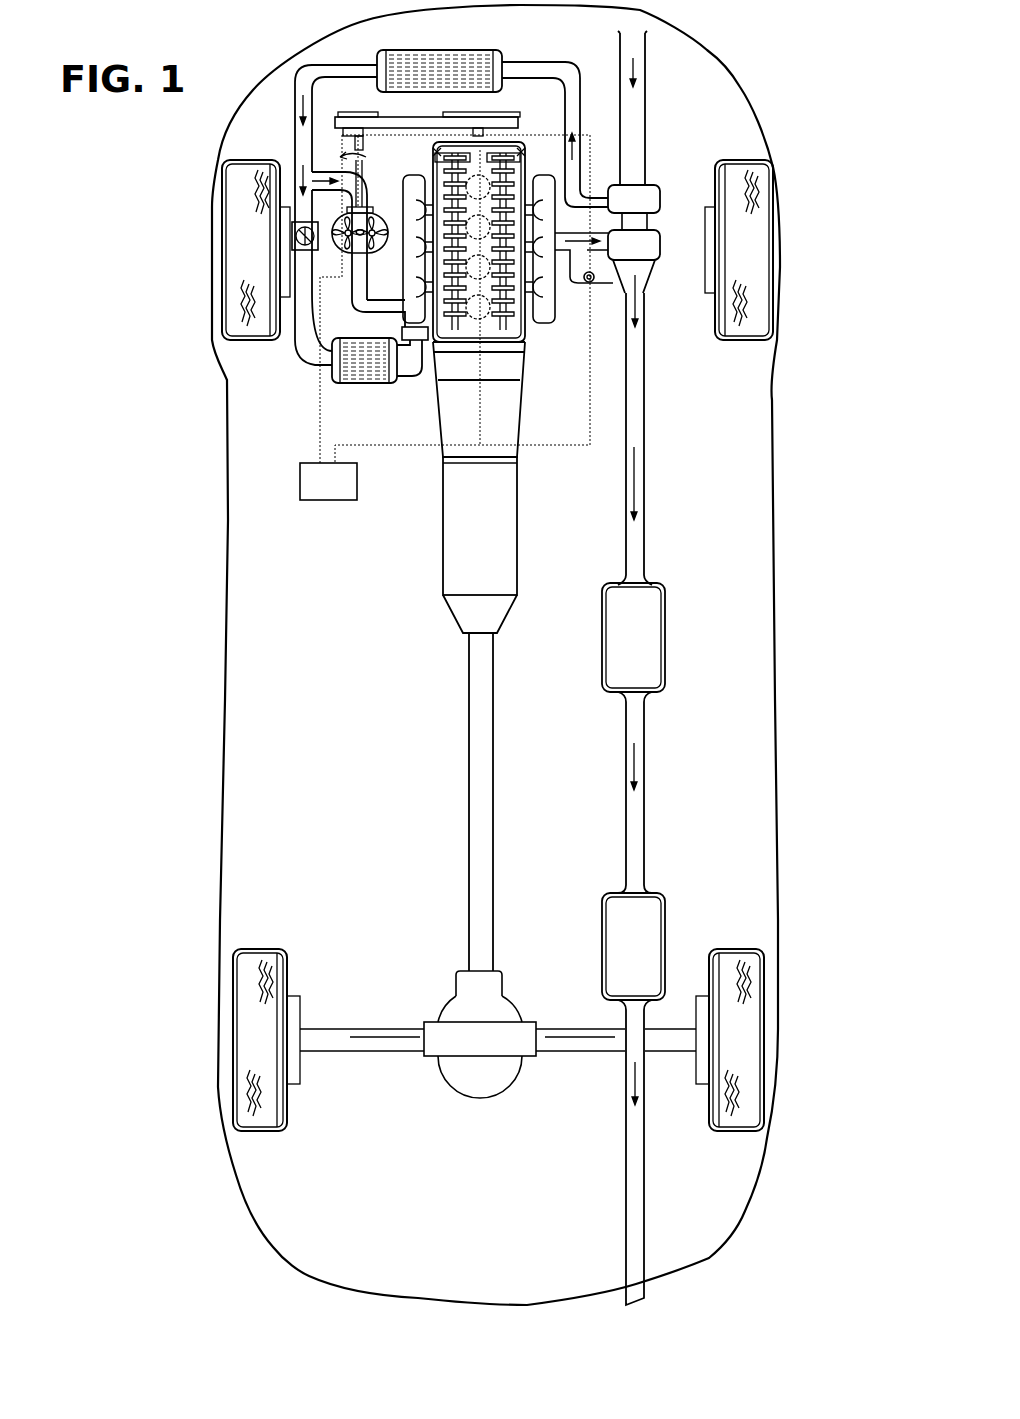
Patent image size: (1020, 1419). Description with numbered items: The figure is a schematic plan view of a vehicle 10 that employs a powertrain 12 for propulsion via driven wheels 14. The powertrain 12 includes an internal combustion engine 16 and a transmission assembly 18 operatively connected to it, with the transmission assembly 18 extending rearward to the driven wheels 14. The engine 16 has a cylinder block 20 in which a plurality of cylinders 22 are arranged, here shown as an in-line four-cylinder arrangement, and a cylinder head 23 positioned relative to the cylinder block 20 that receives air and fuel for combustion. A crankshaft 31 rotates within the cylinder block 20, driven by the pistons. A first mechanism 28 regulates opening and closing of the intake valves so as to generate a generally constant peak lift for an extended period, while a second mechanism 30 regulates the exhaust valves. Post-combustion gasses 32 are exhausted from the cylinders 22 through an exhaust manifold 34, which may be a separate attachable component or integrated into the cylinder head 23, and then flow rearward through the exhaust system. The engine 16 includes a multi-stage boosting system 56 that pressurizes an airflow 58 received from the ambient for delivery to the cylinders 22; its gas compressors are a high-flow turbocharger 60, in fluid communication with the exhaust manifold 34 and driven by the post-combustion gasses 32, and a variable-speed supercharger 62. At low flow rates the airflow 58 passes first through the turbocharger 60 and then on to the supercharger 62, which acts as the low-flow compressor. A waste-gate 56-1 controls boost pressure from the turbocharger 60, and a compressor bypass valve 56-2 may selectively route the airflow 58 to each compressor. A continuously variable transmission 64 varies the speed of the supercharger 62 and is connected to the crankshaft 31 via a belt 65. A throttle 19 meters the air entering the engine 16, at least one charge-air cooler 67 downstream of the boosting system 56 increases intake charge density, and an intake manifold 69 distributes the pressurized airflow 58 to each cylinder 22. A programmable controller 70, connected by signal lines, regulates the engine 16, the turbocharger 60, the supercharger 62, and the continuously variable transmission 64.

The vehicle 10 is at (192, 552).
The powertrain 12 is at (402, 609).
The driven wheels 14 is at (262, 1042).
The internal combustion engine 16 is at (487, 266).
The transmission assembly 18 is at (470, 546).
The throttle 19 is at (404, 328).
The cylinder block 20 is at (524, 344).
The cylinders 22 is at (478, 247).
The cylinder head 23 is at (503, 335).
The first mechanism 28 is at (437, 147).
The second mechanism 30 is at (520, 147).
The crankshaft 31 is at (474, 358).
The post-combustion gasses 32 is at (569, 262).
The exhaust manifold 34 is at (547, 228).
The multi-stage boosting system 56 is at (604, 95).
The waste-gate 56-1 is at (594, 280).
The compressor bypass valve 56-2 is at (303, 213).
The airflow 58 is at (296, 97).
The high-flow turbocharger 60 is at (665, 210).
The variable-speed supercharger 62 is at (385, 222).
The continuously variable transmission (CVT) 64 is at (320, 253).
The belt 65 is at (432, 124).
The charge-air cooler 67 is at (428, 80).
The intake manifold 69 is at (410, 267).
The programmable controller 70 is at (318, 491).